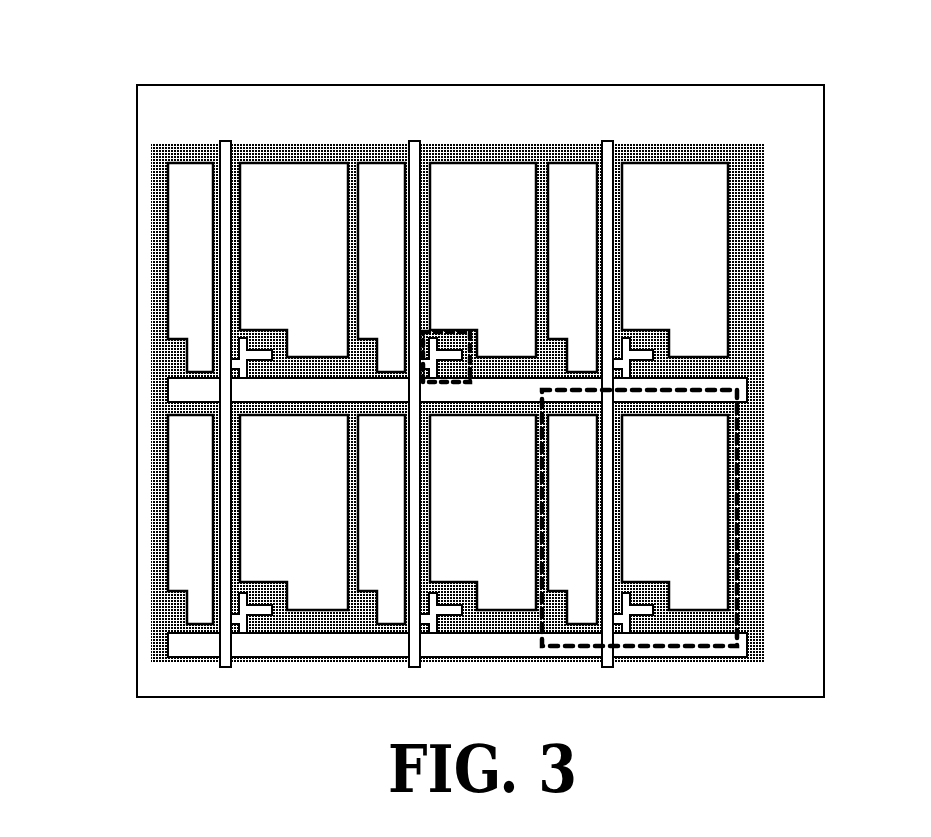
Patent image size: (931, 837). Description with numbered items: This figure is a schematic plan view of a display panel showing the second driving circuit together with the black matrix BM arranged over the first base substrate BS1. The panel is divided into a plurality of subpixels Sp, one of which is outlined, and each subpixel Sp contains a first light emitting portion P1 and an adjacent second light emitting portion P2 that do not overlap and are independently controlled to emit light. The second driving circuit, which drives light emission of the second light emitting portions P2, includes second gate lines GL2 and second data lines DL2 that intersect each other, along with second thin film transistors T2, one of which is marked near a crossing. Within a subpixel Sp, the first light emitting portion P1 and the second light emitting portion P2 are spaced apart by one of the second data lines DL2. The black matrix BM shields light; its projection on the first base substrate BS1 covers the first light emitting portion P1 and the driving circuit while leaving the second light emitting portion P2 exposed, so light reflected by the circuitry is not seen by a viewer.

The first base substrate BS1 is at (480, 85).
The second data line DL2 is at (418, 145).
The black matrix BM is at (588, 151).
The second gate line GL2 is at (193, 389).
The second thin film transistor T2 is at (440, 331).
The first light emitting portion P1 is at (572, 519).
The second light emitting portion P2 is at (620, 346).
The subpixel Sp is at (738, 525).